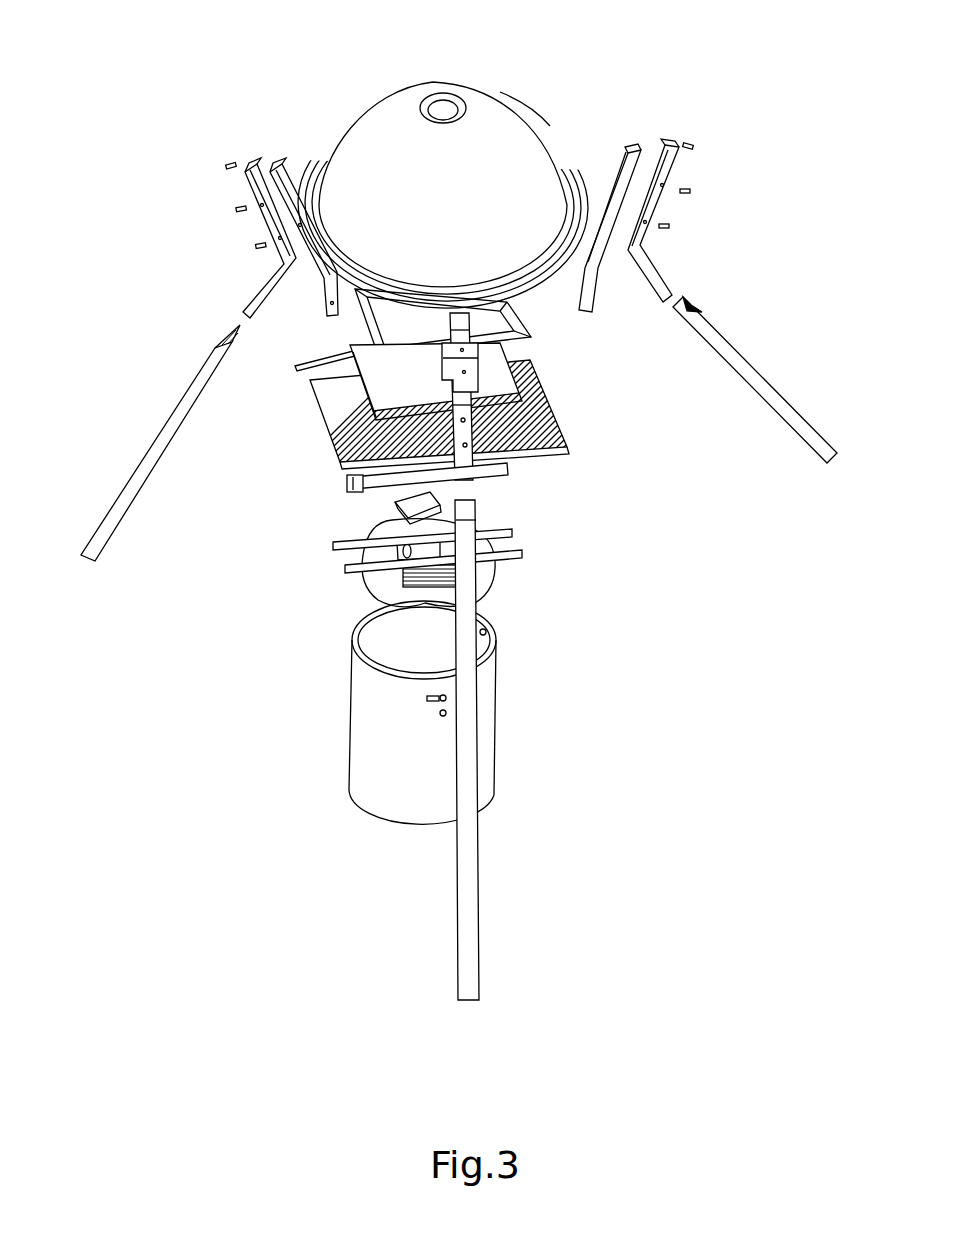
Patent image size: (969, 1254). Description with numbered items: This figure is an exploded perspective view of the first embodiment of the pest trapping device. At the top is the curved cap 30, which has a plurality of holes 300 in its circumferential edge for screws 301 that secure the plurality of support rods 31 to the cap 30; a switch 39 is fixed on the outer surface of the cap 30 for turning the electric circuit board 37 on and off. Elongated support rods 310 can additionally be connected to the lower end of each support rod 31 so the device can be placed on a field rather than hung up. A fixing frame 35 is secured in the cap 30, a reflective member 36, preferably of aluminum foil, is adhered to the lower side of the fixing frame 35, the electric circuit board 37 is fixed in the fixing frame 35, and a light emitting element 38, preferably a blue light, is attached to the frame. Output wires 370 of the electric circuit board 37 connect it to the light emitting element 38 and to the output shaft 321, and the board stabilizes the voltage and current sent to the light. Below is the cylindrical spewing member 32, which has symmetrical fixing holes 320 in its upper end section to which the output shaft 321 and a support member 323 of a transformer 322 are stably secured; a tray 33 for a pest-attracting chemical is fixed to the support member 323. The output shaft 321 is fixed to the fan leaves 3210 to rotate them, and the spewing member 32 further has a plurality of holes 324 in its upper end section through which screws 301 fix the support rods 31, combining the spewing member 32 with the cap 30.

The cap 30 is at (384, 82).
The switch 39 is at (518, 106).
The support rods 31 is at (272, 155).
The screws 301 is at (226, 156).
The elongated support rods 310 is at (672, 278).
The holes 300 is at (524, 302).
The electric circuit board 37 is at (342, 345).
The output wires 370 is at (302, 358).
The fixing frame 35 is at (528, 337).
The reflective member 36 is at (562, 455).
The light emitting element 38 is at (515, 475).
The tray 33 is at (388, 507).
The output shaft 321 is at (393, 525).
The transformer 322 is at (449, 493).
The support member 323 is at (325, 543).
The fan leaves 3210 is at (350, 586).
The fixing holes 320 is at (345, 658).
The holes 324 is at (427, 698).
The spewing member 32 is at (338, 767).